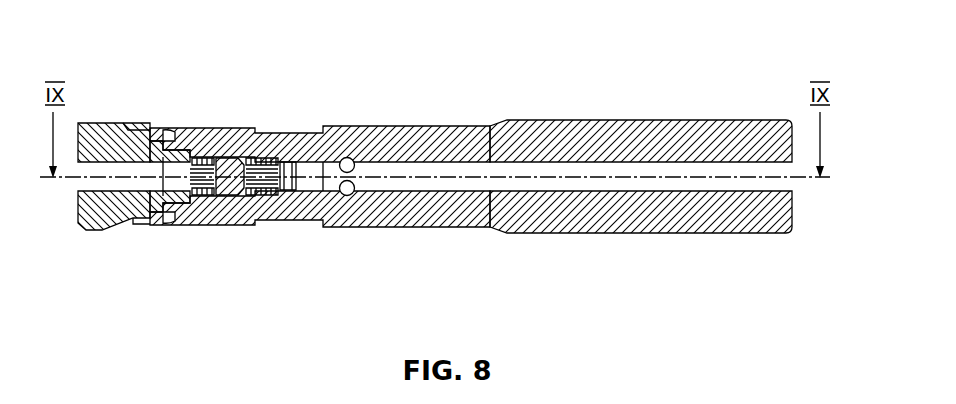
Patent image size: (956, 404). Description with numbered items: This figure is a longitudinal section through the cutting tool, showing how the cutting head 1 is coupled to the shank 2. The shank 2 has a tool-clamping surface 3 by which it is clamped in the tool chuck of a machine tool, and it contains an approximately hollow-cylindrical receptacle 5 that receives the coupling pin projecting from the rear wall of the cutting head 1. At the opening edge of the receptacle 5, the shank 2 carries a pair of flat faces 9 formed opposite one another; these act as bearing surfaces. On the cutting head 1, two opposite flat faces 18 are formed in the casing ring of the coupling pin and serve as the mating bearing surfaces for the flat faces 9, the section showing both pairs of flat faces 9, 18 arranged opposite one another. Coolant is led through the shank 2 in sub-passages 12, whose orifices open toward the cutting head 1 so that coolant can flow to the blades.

The cutting head 1 is at (97, 113).
The shank 2 is at (430, 116).
The tool-clamping surface 3 is at (658, 119).
The receptacle 5 is at (250, 197).
The flat faces 9 is at (203, 128).
The sub-passages 12 is at (346, 157).
The flat faces 18 is at (172, 128).